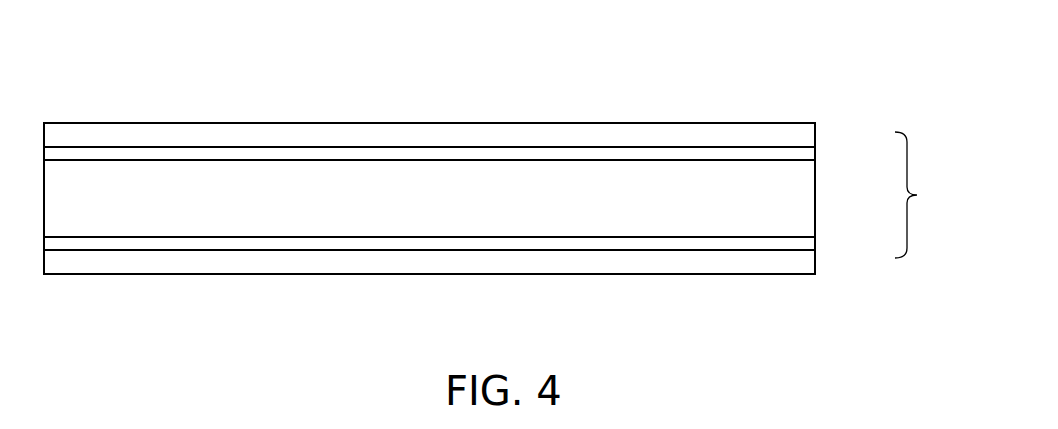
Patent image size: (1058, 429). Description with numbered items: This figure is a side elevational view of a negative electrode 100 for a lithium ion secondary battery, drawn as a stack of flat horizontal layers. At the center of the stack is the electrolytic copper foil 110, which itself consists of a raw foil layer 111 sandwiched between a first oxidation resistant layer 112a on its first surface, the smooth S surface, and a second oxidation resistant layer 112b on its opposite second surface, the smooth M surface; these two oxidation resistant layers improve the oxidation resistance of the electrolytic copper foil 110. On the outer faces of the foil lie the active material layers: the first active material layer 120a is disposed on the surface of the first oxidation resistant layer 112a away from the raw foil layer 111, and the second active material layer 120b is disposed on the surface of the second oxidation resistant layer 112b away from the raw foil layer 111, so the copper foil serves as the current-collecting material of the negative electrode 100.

The negative electrode 100 is at (87, 43).
The electrolytic copper foil 110 is at (930, 195).
The raw foil layer 111 is at (797, 202).
The first oxidation resistant layer 112a is at (800, 154).
The second oxidation resistant layer 112b is at (800, 243).
The first active material layer 120a is at (797, 135).
The second active material layer 120b is at (800, 263).